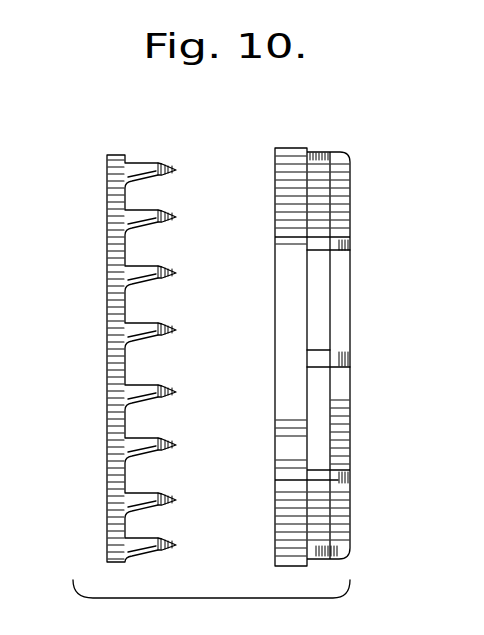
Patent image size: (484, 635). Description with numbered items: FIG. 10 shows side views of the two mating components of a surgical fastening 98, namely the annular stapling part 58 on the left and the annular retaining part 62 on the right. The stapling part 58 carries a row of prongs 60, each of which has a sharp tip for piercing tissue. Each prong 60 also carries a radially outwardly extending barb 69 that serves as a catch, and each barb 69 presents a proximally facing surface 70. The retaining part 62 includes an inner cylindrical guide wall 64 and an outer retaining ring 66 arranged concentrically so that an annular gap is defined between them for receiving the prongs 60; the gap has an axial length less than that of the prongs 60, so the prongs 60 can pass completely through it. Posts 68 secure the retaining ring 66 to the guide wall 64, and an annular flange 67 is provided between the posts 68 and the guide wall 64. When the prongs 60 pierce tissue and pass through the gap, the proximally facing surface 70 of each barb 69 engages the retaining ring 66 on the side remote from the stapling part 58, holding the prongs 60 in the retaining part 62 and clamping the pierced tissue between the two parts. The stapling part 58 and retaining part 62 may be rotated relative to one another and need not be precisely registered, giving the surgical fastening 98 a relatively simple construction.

The stapling part 58 is at (123, 353).
The prongs 60 is at (138, 165).
The retaining part 62 is at (327, 338).
The inner cylindrical guide wall 64 is at (325, 297).
The outer retaining ring 66 is at (275, 520).
The annular flange 67 is at (340, 500).
The posts 68 is at (318, 152).
The barb 69 is at (176, 170).
The proximally facing surface 70 is at (159, 166).
The surgical fastening 98 is at (232, 161).